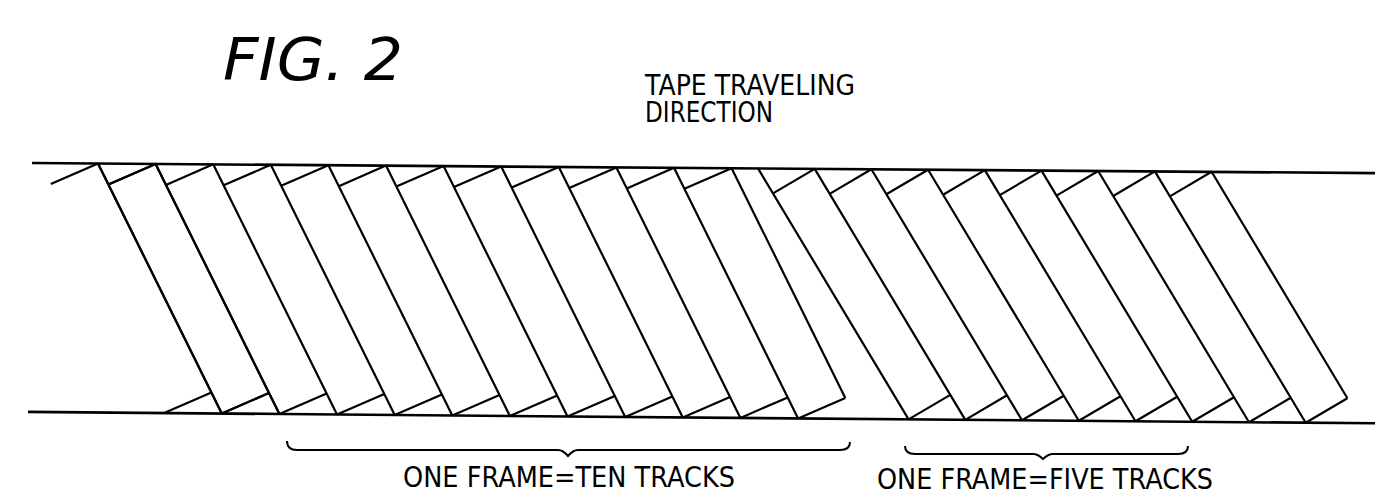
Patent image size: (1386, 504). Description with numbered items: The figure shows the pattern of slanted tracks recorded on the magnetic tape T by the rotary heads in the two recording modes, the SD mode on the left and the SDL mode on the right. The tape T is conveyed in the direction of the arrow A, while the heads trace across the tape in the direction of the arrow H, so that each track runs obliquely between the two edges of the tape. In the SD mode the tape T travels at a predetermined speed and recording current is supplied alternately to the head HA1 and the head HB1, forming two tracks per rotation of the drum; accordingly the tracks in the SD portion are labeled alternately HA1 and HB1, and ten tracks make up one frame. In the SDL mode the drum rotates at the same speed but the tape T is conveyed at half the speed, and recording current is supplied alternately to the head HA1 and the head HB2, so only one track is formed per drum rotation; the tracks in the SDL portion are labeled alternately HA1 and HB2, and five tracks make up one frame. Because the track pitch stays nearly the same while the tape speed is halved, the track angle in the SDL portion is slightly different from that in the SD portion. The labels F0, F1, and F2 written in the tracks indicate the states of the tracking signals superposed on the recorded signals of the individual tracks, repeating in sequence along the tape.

The magnetic tape T is at (1296, 170).
The tape traveling direction arrow A is at (542, 97).
The head tracing direction arrow H is at (254, 428).
The SD mode SD is at (448, 273).
The SDL mode SDL is at (1052, 277).
The tracking signal state F0 is at (728, 300).
The tracking signal state F1 is at (729, 300).
The tracking signal state F2 is at (728, 300).
The head HA1 is at (764, 366).
The head HB1 is at (513, 364).
The head HB2 is at (1132, 368).